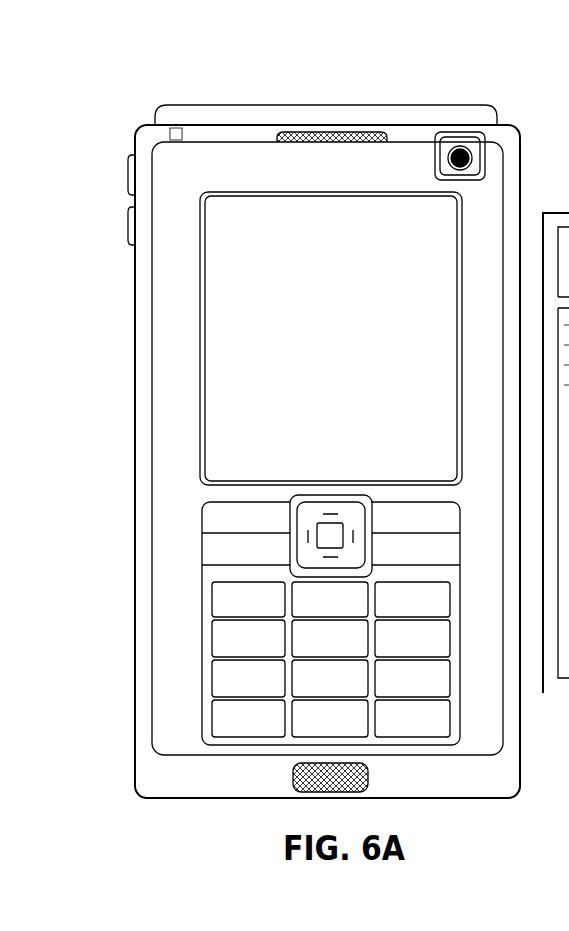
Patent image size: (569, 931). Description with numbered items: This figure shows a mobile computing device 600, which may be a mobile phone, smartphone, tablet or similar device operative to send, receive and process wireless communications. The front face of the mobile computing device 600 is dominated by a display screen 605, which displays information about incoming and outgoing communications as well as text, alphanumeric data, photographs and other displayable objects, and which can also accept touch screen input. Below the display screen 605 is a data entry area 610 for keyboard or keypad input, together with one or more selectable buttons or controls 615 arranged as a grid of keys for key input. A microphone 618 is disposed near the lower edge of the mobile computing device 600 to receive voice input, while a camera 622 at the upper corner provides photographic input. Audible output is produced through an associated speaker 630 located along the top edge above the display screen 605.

The mobile computing device 600 is at (128, 126).
The display screen 605 is at (233, 323).
The data entry area 610 is at (202, 544).
The selectable buttons or controls 615 is at (222, 638).
The microphone 618 is at (293, 784).
The camera 622 is at (462, 158).
The speaker 630 is at (335, 139).